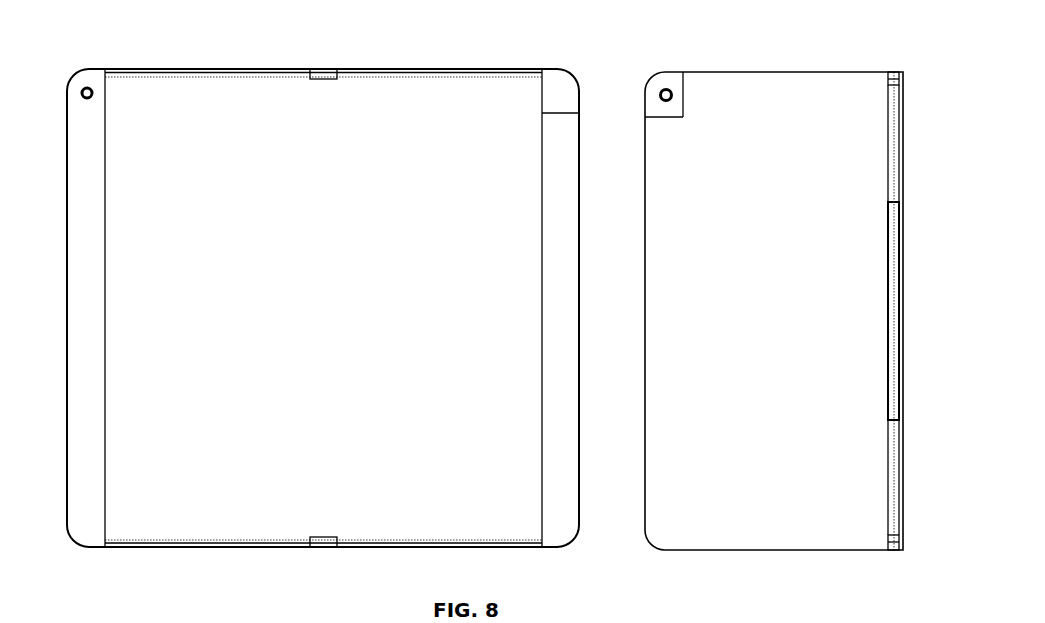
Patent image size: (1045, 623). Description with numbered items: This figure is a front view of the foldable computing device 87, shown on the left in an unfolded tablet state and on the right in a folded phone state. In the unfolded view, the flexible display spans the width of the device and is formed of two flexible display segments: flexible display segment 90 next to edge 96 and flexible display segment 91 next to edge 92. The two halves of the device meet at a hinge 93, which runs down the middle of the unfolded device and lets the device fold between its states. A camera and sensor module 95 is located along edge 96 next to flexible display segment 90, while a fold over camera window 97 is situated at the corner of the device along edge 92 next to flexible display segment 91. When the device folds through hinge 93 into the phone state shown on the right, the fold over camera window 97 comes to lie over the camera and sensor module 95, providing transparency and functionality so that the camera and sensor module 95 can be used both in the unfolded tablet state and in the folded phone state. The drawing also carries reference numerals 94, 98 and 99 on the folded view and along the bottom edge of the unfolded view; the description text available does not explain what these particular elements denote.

The foldable computing device 87 is at (114, 43).
The flexible display segment 90 is at (207, 69).
The flexible display segment 91 is at (440, 69).
The edge 92 is at (579, 221).
The hinge 93 is at (323, 69).
The housing back 94 is at (645, 398).
The camera and sensor module 95 is at (82, 93).
The edge 96 is at (67, 399).
The fold over camera window 97 is at (562, 93).
The bottom edge first portion 98 is at (160, 548).
The bottom edge second portion 99 is at (210, 548).